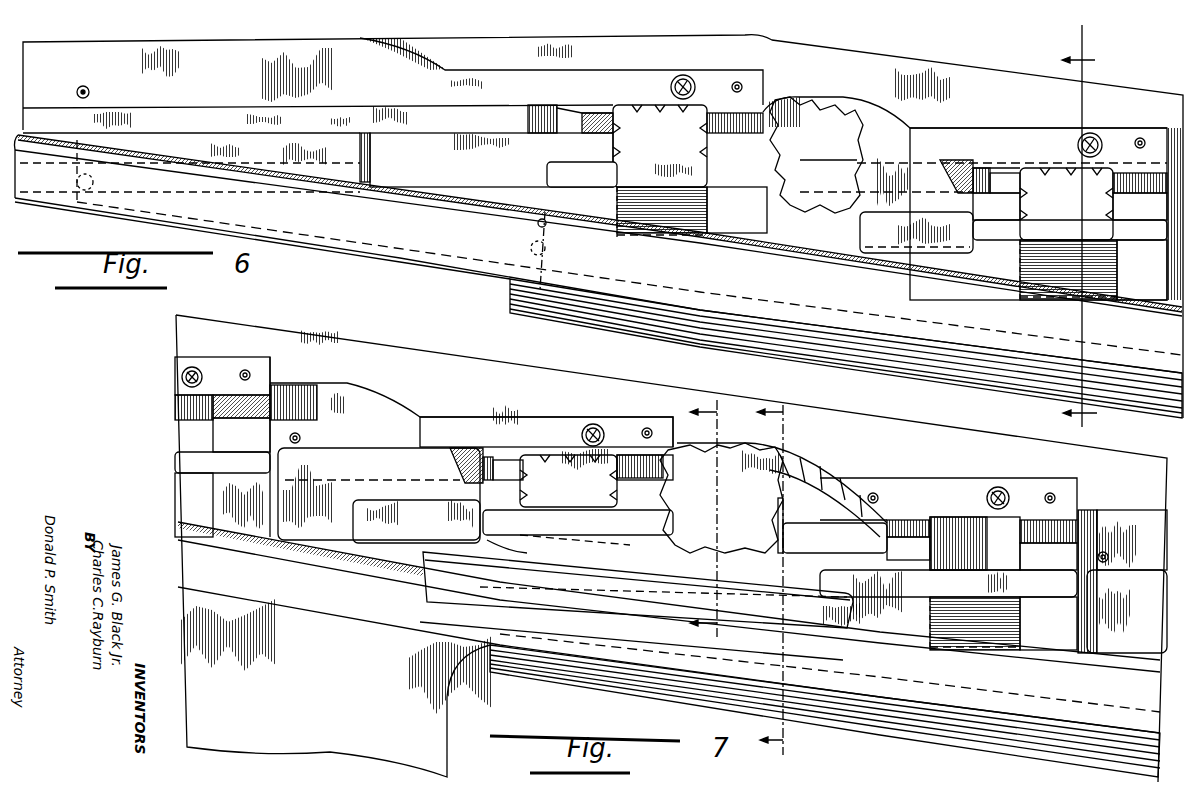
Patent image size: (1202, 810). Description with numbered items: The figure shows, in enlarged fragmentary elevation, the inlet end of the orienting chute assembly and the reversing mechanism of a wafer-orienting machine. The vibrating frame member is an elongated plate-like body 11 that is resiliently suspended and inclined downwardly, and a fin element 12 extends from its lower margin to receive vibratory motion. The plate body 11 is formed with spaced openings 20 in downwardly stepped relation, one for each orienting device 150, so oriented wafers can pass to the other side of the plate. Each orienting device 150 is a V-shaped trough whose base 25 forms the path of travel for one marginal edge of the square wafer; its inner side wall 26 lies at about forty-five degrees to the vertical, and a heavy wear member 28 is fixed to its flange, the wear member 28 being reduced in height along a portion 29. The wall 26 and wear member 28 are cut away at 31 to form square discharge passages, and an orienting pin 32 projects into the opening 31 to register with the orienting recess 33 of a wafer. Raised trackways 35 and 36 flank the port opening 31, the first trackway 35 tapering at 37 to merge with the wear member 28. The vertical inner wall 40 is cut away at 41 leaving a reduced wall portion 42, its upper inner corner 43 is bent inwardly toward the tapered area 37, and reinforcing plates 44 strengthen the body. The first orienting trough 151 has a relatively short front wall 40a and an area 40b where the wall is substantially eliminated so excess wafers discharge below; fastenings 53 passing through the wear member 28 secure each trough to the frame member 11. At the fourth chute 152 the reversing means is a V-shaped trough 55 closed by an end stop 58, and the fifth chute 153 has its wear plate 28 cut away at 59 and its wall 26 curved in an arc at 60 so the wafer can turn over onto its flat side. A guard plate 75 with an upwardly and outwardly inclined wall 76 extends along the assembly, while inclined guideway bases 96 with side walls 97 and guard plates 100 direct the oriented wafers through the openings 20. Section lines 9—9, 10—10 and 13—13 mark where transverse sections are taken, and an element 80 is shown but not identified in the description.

In FIG. 6, the section line 9— 9 is at (1080, 228).
In FIG. 7, the section line 10— 10 is at (782, 580).
In FIG. 6, the plate frame member 11 is at (878, 65).
In FIG. 7, the plate frame member 11 is at (455, 365).
In FIG. 7, the fin element 12 is at (288, 745).
In FIG. 7, the section line 13— 13 is at (718, 516).
In FIG. 6, the spaced openings 20 is at (693, 208).
In FIG. 7, the spaced openings 20 is at (215, 510).
In FIG. 7, the trough base 25 is at (600, 545).
In FIG. 7, the inner side wall 26 is at (920, 572).
In FIG. 6, the wear member 28 is at (320, 52).
In FIG. 7, the wear member 28 is at (243, 368).
In FIG. 6, the reduced-height portion of wear member 29 is at (595, 70).
In FIG. 7, the reduced-height portion of wear member 29 is at (532, 417).
In FIG. 6, the discharge opening 31 is at (714, 143).
In FIG. 7, the discharge opening 31 is at (215, 445).
In FIG. 6, the orienting pin 32 is at (672, 78).
In FIG. 7, the orienting pin 32 is at (188, 405).
In FIG. 6, the orienting recess 33 is at (638, 143).
In FIG. 7, the orienting recess 33 is at (560, 470).
In FIG. 6, the first trackway 35 is at (598, 113).
In FIG. 7, the first trackway 35 is at (512, 460).
In FIG. 6, the second trackway 36 is at (790, 100).
In FIG. 7, the second trackway 36 is at (265, 395).
In FIG. 6, the tapered area 37 is at (543, 105).
In FIG. 7, the tapered area 37 is at (488, 457).
In FIG. 6, the inner wall 40 is at (905, 165).
In FIG. 7, the inner wall 40 is at (385, 444).
In FIG. 6, the front wall of first trough 40a is at (400, 150).
In FIG. 6, the cut-away wall area 40b is at (462, 185).
In FIG. 6, the cut-away portion of wall 41 is at (1003, 218).
In FIG. 6, the reduced wall portion 42 is at (1066, 228).
In FIG. 7, the reduced wall portion 42 is at (190, 478).
In FIG. 6, the upper inner corner 43 is at (960, 160).
In FIG. 7, the upper inner corner 43 is at (460, 450).
In FIG. 6, the reinforcing plates 44 is at (875, 228).
In FIG. 7, the reinforcing plates 44 is at (370, 500).
In FIG. 6, the fastenings 53 is at (89, 92).
In FIG. 7, the fastenings 53 is at (250, 370).
In FIG. 7, the reversing trough 55 is at (770, 550).
In FIG. 7, the end stop 58 is at (785, 514).
In FIG. 7, the cut-away of wear plate 59 is at (808, 480).
In FIG. 7, the arcuate wall portion 60 is at (508, 565).
In FIG. 6, the guard plate 75 is at (745, 283).
In FIG. 7, the guard plate 75 is at (300, 583).
In FIG. 6, the inclined wall of guard 76 is at (433, 245).
In FIG. 7, the inclined wall of guard 76 is at (338, 605).
In FIG. 6, the rail strip 80 is at (797, 345).
In FIG. 7, the rail strip 80 is at (877, 732).
In FIG. 6, the inclined bases of guideways 96 is at (693, 228).
In FIG. 7, the inclined bases of guideways 96 is at (992, 650).
In FIG. 6, the side walls of guideways 97 is at (693, 205).
In FIG. 7, the side walls of guideways 97 is at (1015, 640).
In FIG. 7, the guard plates 100 is at (985, 569).
In FIG. 6, the orienting device 150 is at (855, 110).
In FIG. 7, the orienting device 150 is at (193, 357).
In FIG. 6, the first orienting trough 151 is at (405, 80).
In FIG. 7, the fourth orienting chute 152 is at (420, 415).
In FIG. 7, the fifth orienting chute 153 is at (940, 478).